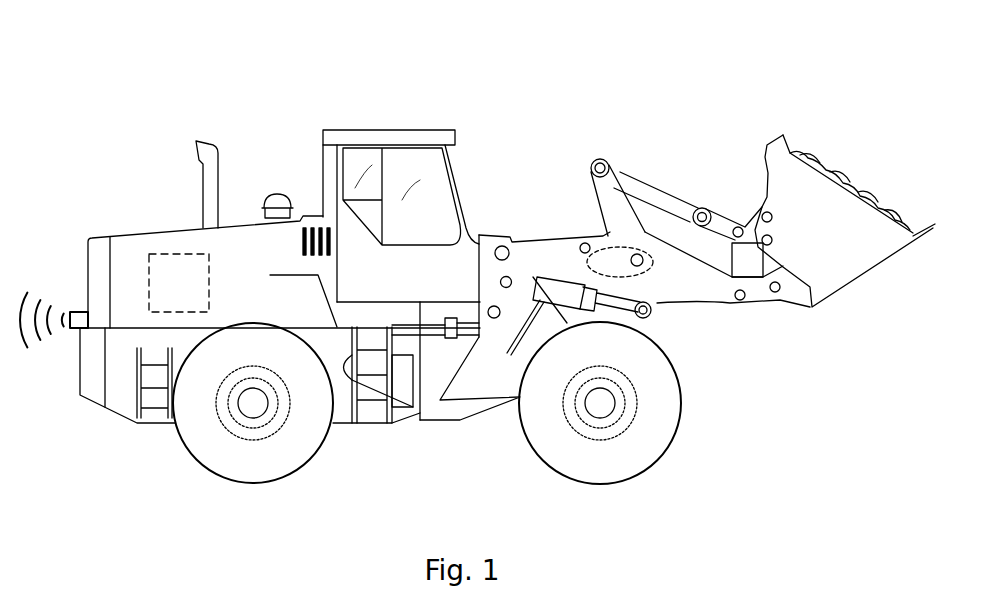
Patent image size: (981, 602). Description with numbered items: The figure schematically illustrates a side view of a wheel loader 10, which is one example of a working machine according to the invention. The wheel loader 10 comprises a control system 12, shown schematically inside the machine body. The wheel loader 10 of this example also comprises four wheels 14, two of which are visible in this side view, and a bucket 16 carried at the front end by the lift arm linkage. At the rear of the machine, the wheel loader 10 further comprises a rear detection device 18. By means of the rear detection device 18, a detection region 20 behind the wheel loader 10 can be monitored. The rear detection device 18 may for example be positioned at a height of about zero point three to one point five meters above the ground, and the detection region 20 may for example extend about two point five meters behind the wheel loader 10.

The wheel loader 10 is at (233, 78).
The control system 12 is at (167, 295).
The wheels 14 is at (245, 462).
The bucket 16 is at (840, 255).
The rear detection device 18 is at (73, 313).
The detection region 20 is at (28, 213).